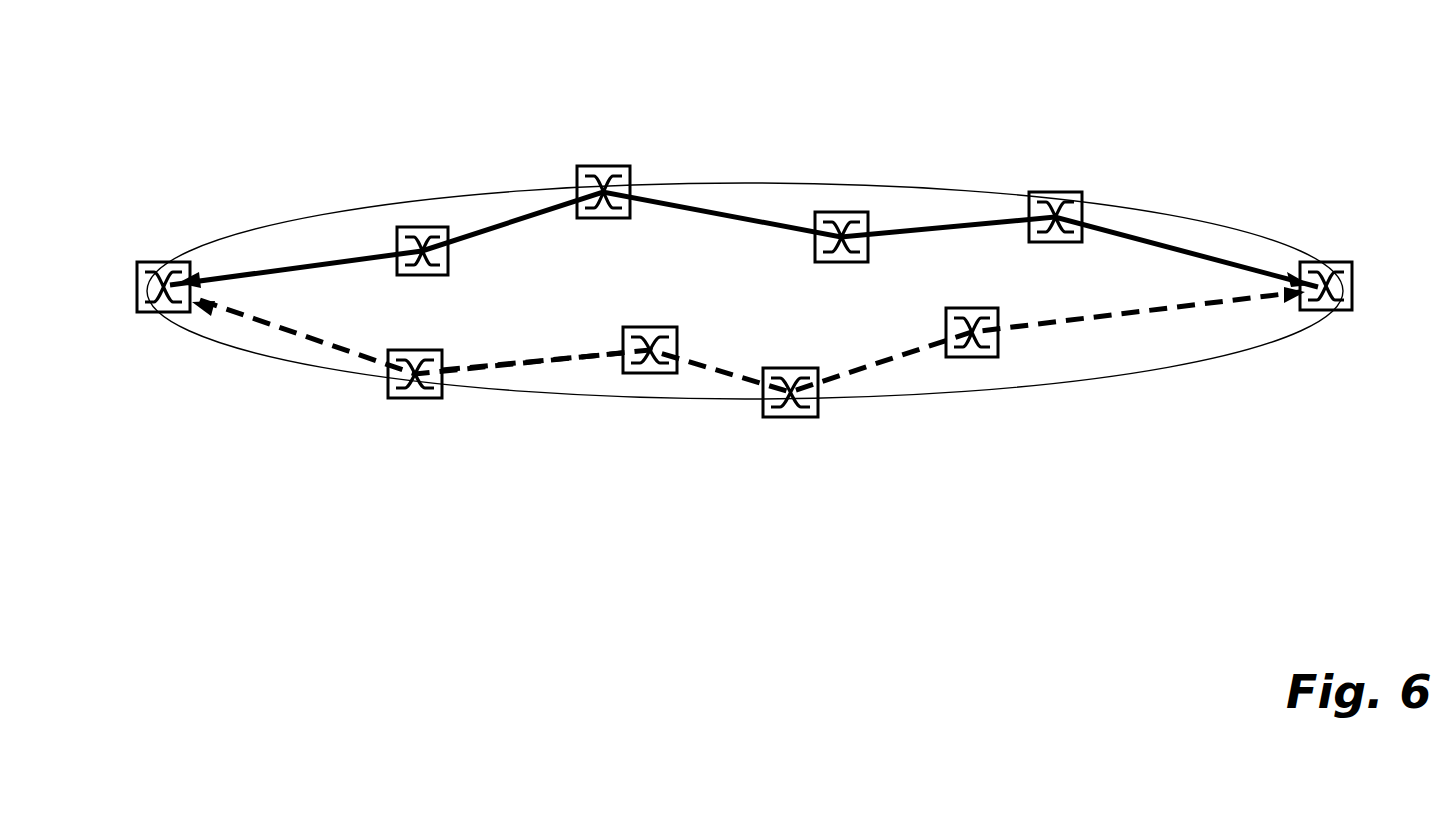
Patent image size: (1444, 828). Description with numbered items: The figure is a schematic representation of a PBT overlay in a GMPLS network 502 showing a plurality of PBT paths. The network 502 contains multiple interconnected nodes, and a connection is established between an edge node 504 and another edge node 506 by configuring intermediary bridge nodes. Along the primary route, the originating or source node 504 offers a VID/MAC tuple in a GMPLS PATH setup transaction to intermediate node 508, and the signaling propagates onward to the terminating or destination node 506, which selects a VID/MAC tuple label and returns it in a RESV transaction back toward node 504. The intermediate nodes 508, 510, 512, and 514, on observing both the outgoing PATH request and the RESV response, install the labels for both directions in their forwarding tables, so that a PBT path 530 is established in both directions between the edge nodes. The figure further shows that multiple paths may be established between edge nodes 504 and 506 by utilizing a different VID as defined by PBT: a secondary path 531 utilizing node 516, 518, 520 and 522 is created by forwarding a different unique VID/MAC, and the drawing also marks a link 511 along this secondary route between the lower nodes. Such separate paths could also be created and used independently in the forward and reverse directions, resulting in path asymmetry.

The network 502 is at (737, 128).
The edge node 504 is at (160, 313).
The edge node 506 is at (1340, 311).
The intermediate node 508 is at (415, 277).
The intermediate node 510 is at (602, 220).
The protection path link 511 is at (532, 390).
The intermediate node 512 is at (838, 263).
The intermediate node 514 is at (1052, 243).
The node 516 is at (410, 399).
The node 518 is at (648, 374).
The node 520 is at (790, 418).
The node 522 is at (968, 358).
The PBT path 530 is at (332, 232).
The secondary path 531 is at (252, 348).